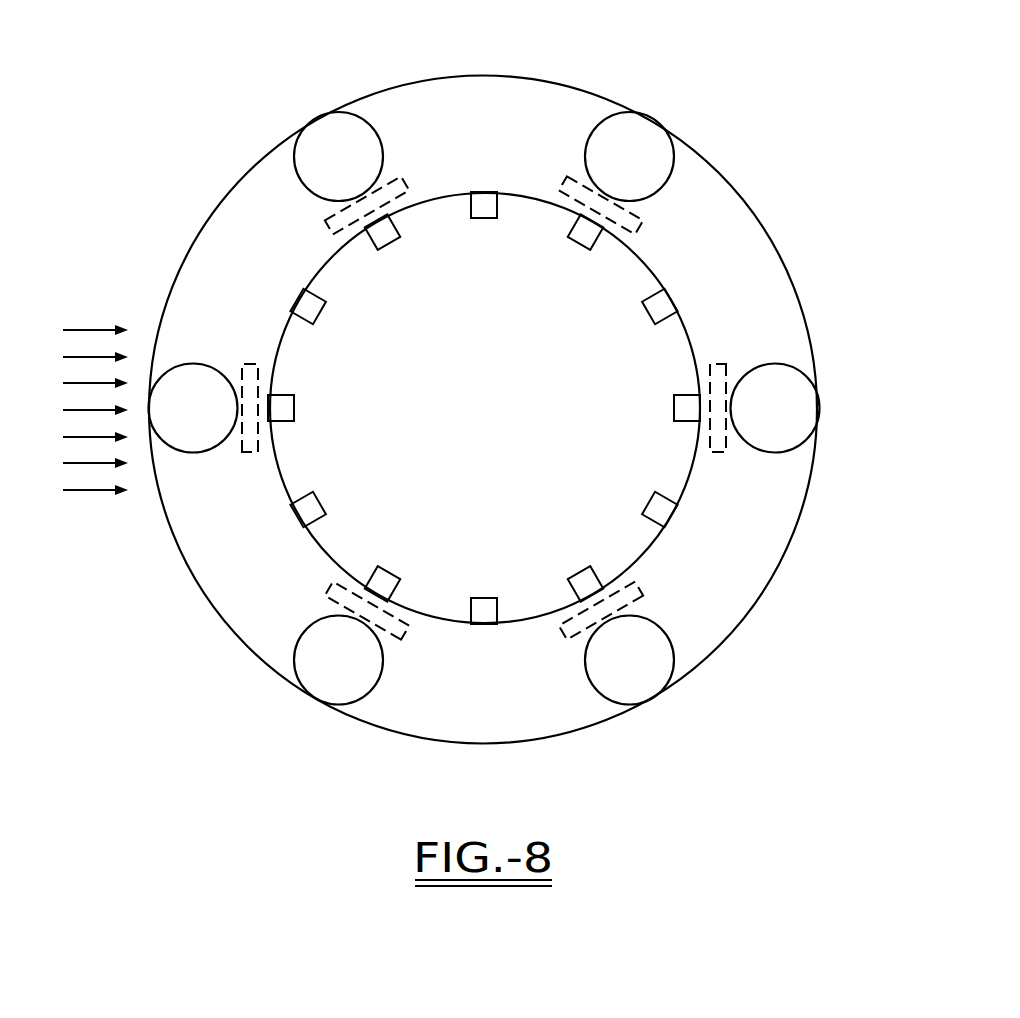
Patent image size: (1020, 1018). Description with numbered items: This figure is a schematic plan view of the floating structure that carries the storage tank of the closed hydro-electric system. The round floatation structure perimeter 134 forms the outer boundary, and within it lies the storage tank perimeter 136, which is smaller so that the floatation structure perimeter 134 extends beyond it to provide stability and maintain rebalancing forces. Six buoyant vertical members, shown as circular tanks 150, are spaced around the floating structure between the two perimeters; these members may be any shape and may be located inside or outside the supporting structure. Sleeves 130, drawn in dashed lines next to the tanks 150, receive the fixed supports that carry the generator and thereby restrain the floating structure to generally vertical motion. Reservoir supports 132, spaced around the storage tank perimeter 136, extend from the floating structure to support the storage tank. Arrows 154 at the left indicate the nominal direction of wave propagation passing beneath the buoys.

The sleeves 130 is at (256, 362).
The reservoir supports 132 is at (286, 408).
The floatation structure perimeter 134 is at (432, 78).
The storage tank perimeter 136 is at (636, 253).
The tanks 150 is at (328, 140).
The arrows 154 is at (90, 318).